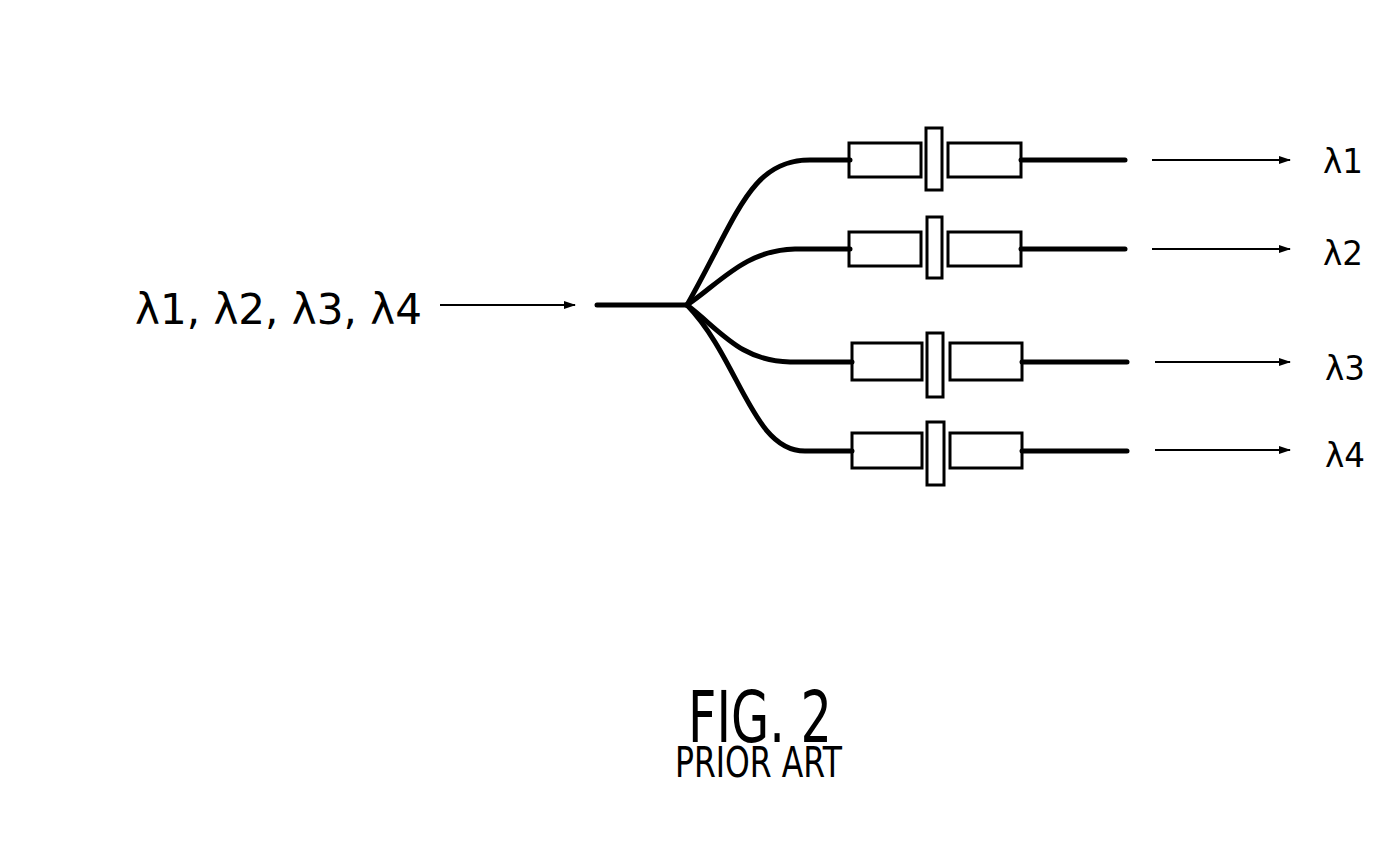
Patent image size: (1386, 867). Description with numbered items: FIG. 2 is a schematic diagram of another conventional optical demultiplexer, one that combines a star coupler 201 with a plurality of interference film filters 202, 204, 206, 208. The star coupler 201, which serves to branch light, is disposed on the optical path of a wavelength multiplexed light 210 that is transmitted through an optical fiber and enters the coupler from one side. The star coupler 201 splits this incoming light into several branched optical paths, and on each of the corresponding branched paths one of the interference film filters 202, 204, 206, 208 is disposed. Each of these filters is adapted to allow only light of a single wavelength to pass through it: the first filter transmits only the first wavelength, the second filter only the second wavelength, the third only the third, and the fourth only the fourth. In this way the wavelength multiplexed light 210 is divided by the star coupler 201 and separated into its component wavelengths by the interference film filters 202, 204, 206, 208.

The star coupler 201 is at (680, 300).
The interference film filter 202 is at (931, 127).
The interference film filter 204 is at (932, 278).
The interference film filter 206 is at (941, 334).
The interference film filter 208 is at (937, 485).
The wavelength multiplexed light 210 is at (623, 309).